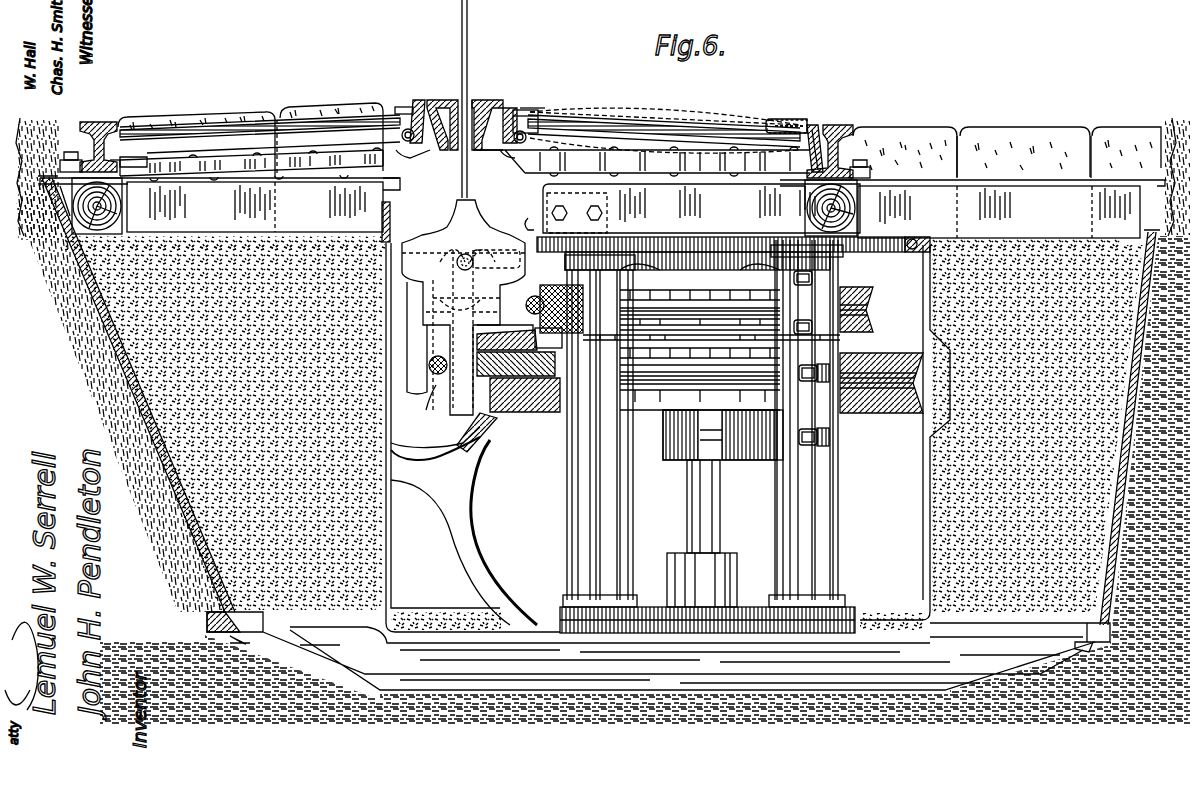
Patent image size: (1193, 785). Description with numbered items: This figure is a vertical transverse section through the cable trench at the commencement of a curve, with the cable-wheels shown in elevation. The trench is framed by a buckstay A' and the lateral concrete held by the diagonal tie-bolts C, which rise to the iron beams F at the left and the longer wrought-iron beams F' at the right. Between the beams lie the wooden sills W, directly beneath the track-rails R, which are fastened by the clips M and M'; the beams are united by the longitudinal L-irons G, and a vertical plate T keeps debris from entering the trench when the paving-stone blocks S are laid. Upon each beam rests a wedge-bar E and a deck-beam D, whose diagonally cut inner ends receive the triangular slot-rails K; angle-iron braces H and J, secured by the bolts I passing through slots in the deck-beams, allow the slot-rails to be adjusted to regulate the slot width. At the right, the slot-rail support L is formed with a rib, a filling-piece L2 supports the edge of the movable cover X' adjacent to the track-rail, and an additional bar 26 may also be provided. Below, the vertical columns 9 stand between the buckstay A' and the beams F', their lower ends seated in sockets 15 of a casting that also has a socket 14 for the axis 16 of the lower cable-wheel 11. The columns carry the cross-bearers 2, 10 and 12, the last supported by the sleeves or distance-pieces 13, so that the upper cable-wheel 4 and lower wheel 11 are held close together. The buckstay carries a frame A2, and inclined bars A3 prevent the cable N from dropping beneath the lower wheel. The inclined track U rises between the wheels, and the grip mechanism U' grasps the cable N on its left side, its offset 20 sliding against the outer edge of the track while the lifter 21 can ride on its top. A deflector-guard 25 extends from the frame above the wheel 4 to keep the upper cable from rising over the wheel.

The buckstay A' is at (658, 651).
The frame A2 is at (450, 524).
The longitudinal inclined bars A3 is at (478, 443).
The diagonal tie-bolts C is at (105, 372).
The deck-beam D is at (463, 130).
The wedge-bar E is at (465, 164).
The iron beams F is at (255, 207).
The wrought-iron beams F' is at (841, 211).
The longitudinal L-irons G is at (394, 222).
The angle-iron braces H is at (430, 150).
The bolts I is at (410, 140).
The angle-braces J is at (404, 106).
The slot-rails K is at (465, 117).
The slot-rail supports L is at (466, 109).
The filling-piece L2 is at (795, 120).
The clip M is at (467, 142).
The clip M' is at (471, 132).
The cable N is at (528, 304).
The track-rails R is at (466, 138).
The paving-stone blocks S is at (639, 129).
The vertical sheet or plate of iron T is at (392, 185).
The inclined track U is at (518, 365).
The grip mechanism U' is at (463, 307).
The longitudinal sills W is at (474, 207).
The movable covers X' is at (665, 107).
The cross-bearer 2 is at (697, 267).
The cable-wheel 4 is at (713, 309).
The vertical columns 9 is at (548, 338).
The cross-bearer 10 is at (711, 337).
The cable-wheel 11 is at (771, 380).
The cross-bearer 12 is at (723, 435).
The sleeves or distance-pieces 13 is at (565, 530).
The socket 14 is at (712, 580).
The sockets 15 is at (566, 616).
The axis 16 is at (714, 506).
The shoulder or offset 20 is at (463, 318).
The lifter 21 is at (427, 369).
The deflector-guard 25 is at (520, 218).
The additional bar 26 is at (522, 110).